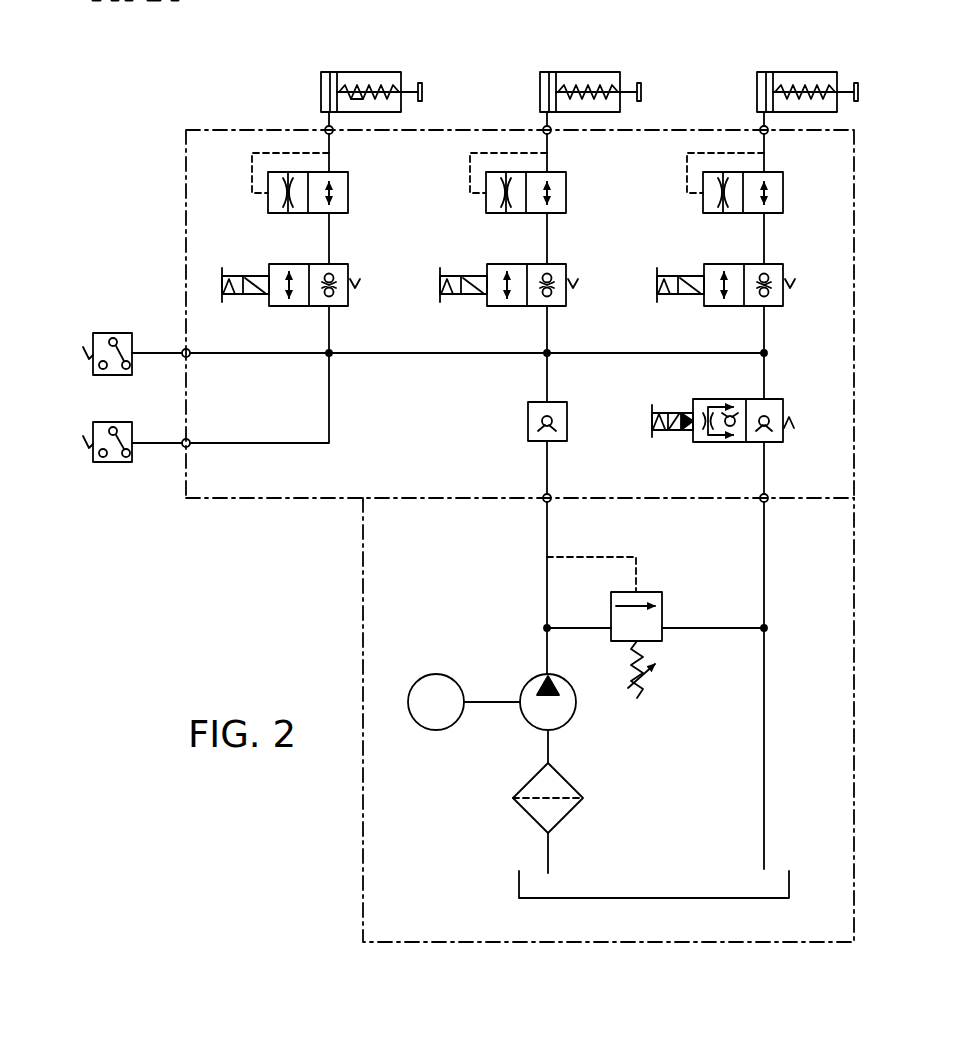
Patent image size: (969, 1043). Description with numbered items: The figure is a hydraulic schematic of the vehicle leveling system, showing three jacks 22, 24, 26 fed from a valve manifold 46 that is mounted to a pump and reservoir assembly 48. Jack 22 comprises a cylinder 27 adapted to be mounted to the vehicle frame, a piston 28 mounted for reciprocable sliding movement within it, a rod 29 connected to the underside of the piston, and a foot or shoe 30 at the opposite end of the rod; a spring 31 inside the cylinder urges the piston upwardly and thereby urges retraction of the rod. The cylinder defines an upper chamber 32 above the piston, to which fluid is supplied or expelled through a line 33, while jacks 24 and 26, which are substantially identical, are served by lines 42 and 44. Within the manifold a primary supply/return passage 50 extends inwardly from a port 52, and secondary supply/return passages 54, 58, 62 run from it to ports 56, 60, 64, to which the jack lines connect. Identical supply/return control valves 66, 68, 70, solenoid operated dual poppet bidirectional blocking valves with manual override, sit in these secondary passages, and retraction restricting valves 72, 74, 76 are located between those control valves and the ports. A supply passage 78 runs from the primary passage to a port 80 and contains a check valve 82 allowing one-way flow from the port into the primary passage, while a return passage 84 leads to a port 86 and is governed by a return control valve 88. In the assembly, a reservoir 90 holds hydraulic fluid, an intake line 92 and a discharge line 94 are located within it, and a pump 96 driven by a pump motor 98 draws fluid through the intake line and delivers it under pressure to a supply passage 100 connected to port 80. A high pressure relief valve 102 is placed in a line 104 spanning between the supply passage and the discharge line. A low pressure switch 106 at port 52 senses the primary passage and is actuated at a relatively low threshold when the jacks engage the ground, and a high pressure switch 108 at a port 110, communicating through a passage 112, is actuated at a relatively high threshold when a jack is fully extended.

The jack 22 is at (366, 90).
The jack 24 is at (578, 58).
The jack 26 is at (785, 62).
The cylinder 27 is at (385, 72).
The piston 28 is at (326, 72).
The rod 29 is at (388, 100).
The foot or shoe 30 is at (422, 93).
The spring 31 is at (360, 100).
The upper chamber 32 is at (325, 90).
The line 33 is at (326, 120).
The line 42 is at (546, 117).
The line 44 is at (762, 118).
The valve manifold 46 is at (148, 212).
The pump and reservoir assembly 48 is at (330, 657).
The primary supply/return passage 50 is at (400, 357).
The port 52 is at (186, 349).
The secondary supply/return passage 54 is at (331, 240).
The port 56 is at (333, 134).
The secondary supply/return passage 58 is at (549, 243).
The port 60 is at (551, 133).
The secondary supply/return passage 62 is at (767, 246).
The port 64 is at (768, 135).
The supply/return control valve 66 is at (259, 304).
The supply/return control valve 68 is at (479, 305).
The supply/return control valve 70 is at (692, 305).
The retraction restricting valve 72 is at (356, 190).
The retraction restricting valve 74 is at (574, 190).
The retraction restricting valve 76 is at (791, 193).
The supply passage 78 is at (546, 467).
The port 80 is at (553, 494).
The check valve 82 is at (570, 418).
The return passage 84 is at (767, 380).
The port 86 is at (768, 494).
The return control valve 88 is at (687, 447).
The reservoir 90 is at (525, 900).
The intake line 92 is at (547, 850).
The discharge line 94 is at (766, 700).
The pump 96 is at (572, 718).
The pump motor 98 is at (436, 674).
The supply passage 100 is at (546, 540).
The high pressure relief valve 102 is at (666, 560).
The line 104 is at (705, 630).
The low pressure switch 106 is at (74, 365).
The high pressure switch 108 is at (86, 453).
The port 110 is at (184, 447).
The passage 112 is at (331, 421).